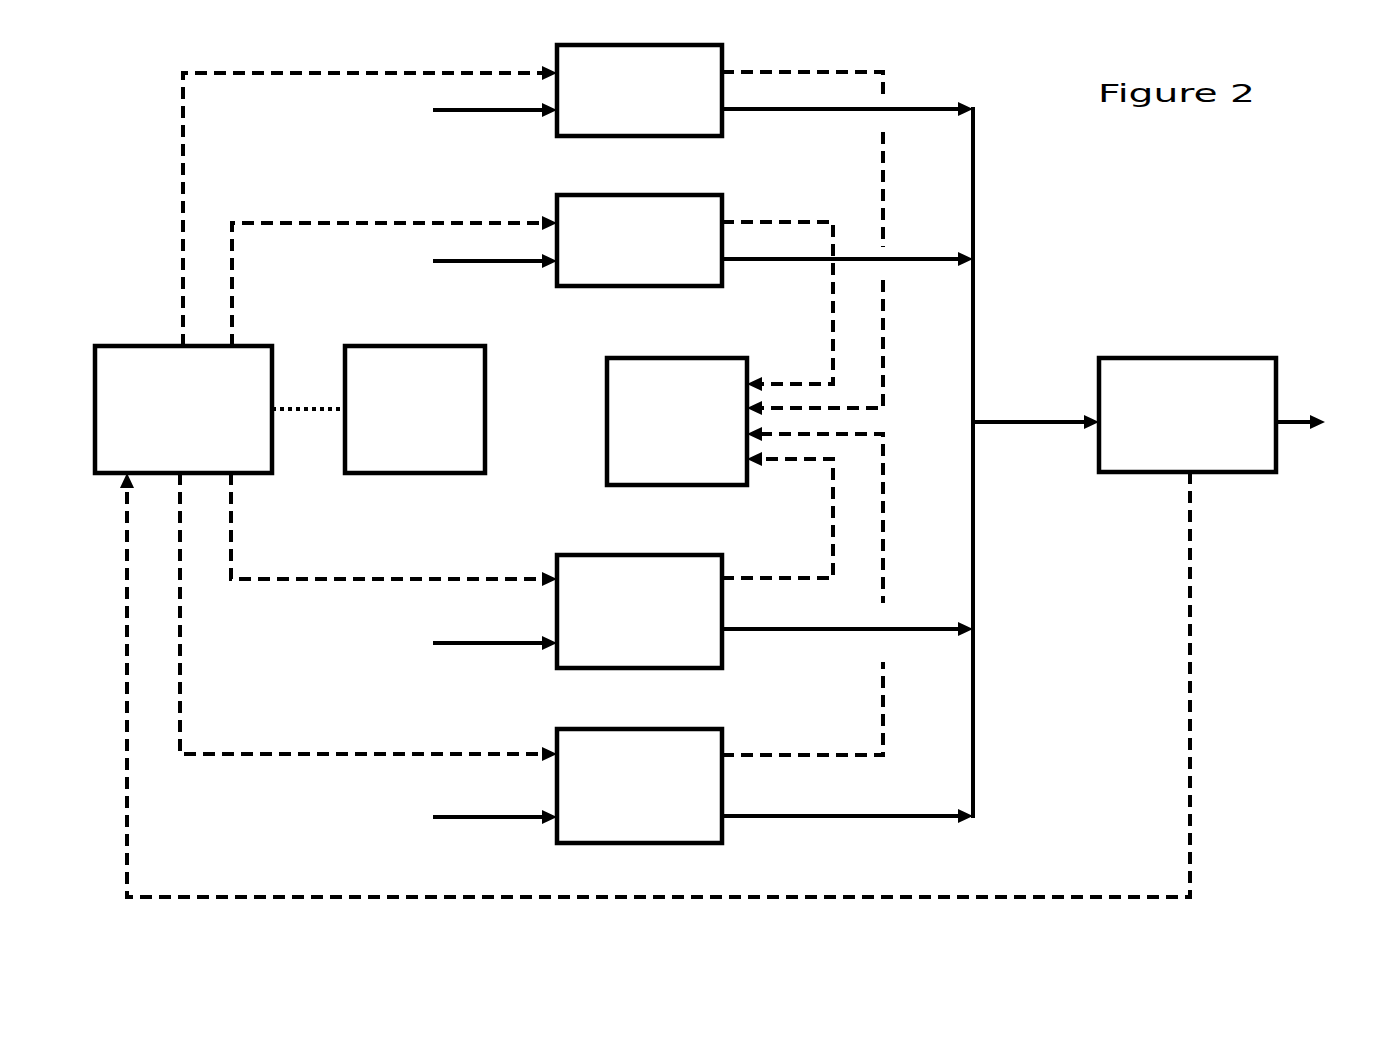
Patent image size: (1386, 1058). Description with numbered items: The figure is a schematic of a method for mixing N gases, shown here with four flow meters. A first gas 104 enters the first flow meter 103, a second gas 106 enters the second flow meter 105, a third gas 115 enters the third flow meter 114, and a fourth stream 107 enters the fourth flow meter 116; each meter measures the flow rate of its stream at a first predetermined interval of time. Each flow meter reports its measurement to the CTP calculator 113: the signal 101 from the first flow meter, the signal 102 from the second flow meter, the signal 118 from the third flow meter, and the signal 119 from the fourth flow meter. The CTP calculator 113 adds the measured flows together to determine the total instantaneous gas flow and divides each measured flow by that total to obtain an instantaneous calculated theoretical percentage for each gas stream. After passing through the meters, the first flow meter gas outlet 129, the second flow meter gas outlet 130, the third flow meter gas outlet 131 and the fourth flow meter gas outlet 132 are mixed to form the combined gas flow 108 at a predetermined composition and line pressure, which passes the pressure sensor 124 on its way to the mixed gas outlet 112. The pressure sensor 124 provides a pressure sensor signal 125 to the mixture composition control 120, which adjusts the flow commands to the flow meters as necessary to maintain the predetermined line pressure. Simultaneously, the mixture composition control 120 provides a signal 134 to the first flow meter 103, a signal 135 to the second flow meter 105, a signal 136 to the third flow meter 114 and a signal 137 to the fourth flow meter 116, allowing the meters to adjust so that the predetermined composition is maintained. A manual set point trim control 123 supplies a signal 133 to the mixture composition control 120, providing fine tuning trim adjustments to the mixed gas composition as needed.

The signal from first flow meter to CTP calculator 101 is at (777, 306).
The signal from second flow meter to CTP calculator 102 is at (777, 515).
The first flow meter 103 is at (639, 240).
The first gas inlet 104 is at (465, 262).
The second flow meter 105 is at (639, 611).
The second gas inlet 106 is at (456, 644).
The flow sensor 107 is at (465, 818).
The combined gas flow 108 is at (1036, 404).
The mixed gas outlet 112 is at (1327, 423).
The CTP calculator 113 is at (677, 421).
The third flow meter 114 is at (639, 90).
The third gas inlet 115 is at (461, 111).
The fourth flow meter 116 is at (639, 786).
The signal from third flow meter to CTP calculator 118 is at (824, 243).
The signal from fourth flow meter to CTP calculator 119 is at (824, 591).
The mixture composition control 120 is at (183, 409).
The manual set point trim control 123 is at (415, 409).
The pressure sensor 124 is at (1187, 415).
The pressure sensor signal 125 is at (655, 684).
The first flow meter gas outlet 129 is at (847, 243).
The second flow meter gas outlet 130 is at (847, 613).
The third flow meter gas outlet 131 is at (847, 446).
The fourth flow meter gas outlet 132 is at (847, 801).
The signal from manual set point control to mixture composition control 133 is at (308, 389).
The signal from mixture composition control to first flow meter 134 is at (394, 281).
The signal from mixture composition control to second flow meter 135 is at (394, 529).
The signal from mixture composition control to third flow meter 136 is at (370, 206).
The signal from mixture composition control to fourth flow meter 137 is at (368, 617).